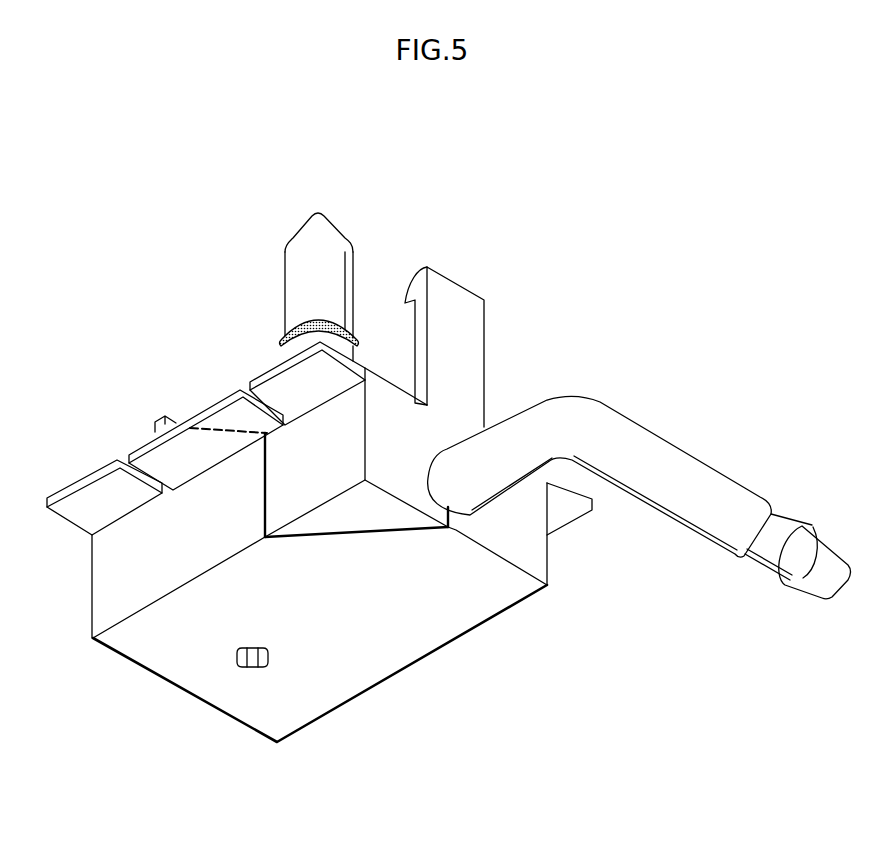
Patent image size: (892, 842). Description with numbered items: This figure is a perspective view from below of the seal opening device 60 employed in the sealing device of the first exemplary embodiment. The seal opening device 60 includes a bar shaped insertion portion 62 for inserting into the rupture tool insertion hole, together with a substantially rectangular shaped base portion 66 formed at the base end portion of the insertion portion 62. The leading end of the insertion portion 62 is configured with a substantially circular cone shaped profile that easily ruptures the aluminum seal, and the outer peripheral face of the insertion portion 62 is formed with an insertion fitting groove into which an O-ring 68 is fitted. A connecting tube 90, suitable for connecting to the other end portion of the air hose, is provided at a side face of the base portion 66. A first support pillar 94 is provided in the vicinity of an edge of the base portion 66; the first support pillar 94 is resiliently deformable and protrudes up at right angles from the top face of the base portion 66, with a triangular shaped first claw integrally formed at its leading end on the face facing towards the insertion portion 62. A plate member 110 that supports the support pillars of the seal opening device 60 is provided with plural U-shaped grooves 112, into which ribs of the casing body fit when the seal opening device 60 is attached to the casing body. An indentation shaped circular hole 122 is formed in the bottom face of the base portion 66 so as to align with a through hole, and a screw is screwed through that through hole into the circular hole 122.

The seal opening device 60 is at (185, 206).
The insertion portion 62 is at (296, 268).
The base portion 66 is at (137, 591).
The O-ring 68 is at (281, 332).
The connecting tube 90 is at (650, 452).
The first support pillar 94 is at (484, 343).
The plate member 110 is at (85, 510).
The U-shaped grooves 112 is at (250, 383).
The circular hole 122 is at (253, 670).